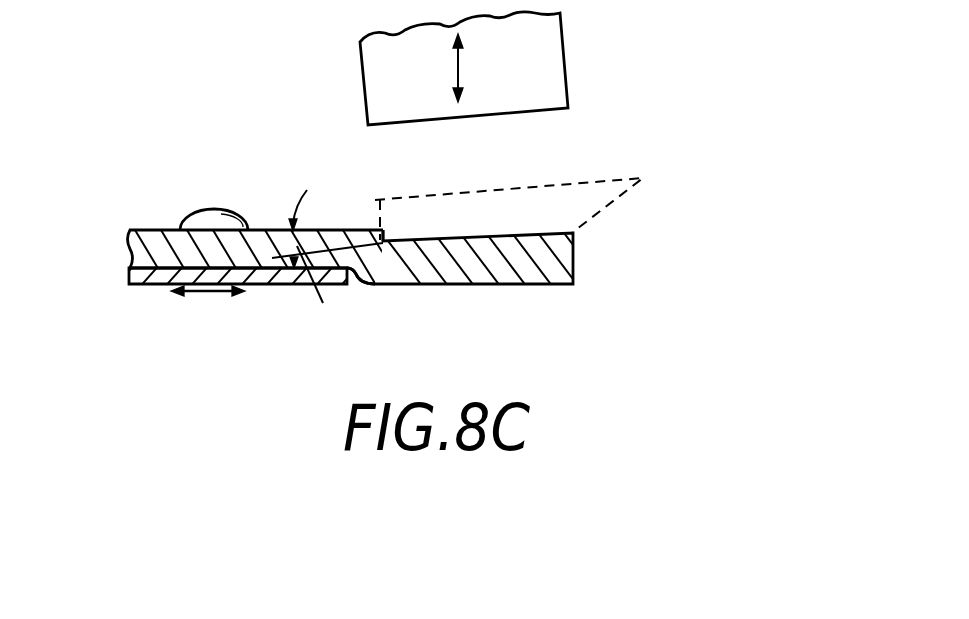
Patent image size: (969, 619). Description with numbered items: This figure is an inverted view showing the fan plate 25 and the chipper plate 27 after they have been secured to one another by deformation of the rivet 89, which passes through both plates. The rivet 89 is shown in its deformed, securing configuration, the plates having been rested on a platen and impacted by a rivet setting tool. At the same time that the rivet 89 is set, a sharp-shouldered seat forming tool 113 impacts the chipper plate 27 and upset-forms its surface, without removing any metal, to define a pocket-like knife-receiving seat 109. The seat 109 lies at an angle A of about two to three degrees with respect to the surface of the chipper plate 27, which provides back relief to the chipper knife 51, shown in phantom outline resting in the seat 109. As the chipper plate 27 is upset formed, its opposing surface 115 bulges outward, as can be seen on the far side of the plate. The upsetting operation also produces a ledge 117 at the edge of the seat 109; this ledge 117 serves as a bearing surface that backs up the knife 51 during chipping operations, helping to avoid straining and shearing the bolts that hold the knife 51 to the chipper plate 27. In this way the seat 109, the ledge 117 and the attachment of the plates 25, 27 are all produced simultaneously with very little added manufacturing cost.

The fan plate 25 is at (146, 268).
The chipper plate 27 is at (138, 246).
The chipper knife 51 is at (612, 183).
The rivet 89 is at (213, 212).
The seat 109 is at (487, 237).
The seat forming tool 113 is at (548, 43).
The opposing surface 115 is at (373, 286).
The ledge 117 is at (383, 240).
The angle A is at (310, 202).